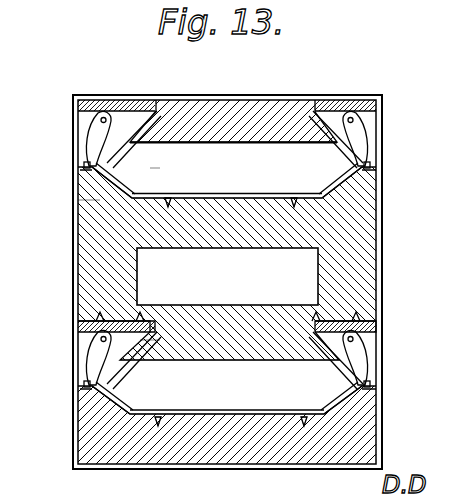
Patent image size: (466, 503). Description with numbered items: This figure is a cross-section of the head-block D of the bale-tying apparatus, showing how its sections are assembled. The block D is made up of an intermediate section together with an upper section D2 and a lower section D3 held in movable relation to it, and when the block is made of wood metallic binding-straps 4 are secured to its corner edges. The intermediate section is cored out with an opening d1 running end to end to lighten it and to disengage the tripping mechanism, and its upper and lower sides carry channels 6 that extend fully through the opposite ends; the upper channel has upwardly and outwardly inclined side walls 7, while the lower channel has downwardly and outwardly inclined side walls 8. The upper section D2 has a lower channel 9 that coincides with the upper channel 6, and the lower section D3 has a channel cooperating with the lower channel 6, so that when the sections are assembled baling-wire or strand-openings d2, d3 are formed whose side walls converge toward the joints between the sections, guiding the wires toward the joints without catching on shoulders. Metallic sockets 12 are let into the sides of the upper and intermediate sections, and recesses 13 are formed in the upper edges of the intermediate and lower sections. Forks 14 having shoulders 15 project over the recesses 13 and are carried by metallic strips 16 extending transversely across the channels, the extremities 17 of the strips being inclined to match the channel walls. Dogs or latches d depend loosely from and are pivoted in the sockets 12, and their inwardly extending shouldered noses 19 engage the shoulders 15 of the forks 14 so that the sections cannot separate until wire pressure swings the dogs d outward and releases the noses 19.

The block D is at (227, 265).
The metallic binding-straps 4 is at (341, 95).
The upper section D2 is at (200, 84).
The lower section D3 is at (248, 469).
The dogs or latches d is at (88, 136).
The opening d1 is at (227, 276).
The baling-wire or strand-opening d2 is at (233, 171).
The baling-wire or strand-opening d3 is at (229, 387).
The channels 6 is at (170, 199).
The inclined side walls 7 is at (82, 210).
The inclined side walls 8 is at (150, 346).
The lower channel 9 is at (160, 166).
The metallic sockets 12 is at (80, 111).
The recesses 13 is at (84, 187).
The forks 14 is at (88, 162).
The shoulders 15 is at (117, 151).
The metallic strips 16 is at (270, 290).
The extremities 17 is at (170, 170).
The shouldered noses 19 is at (78, 172).